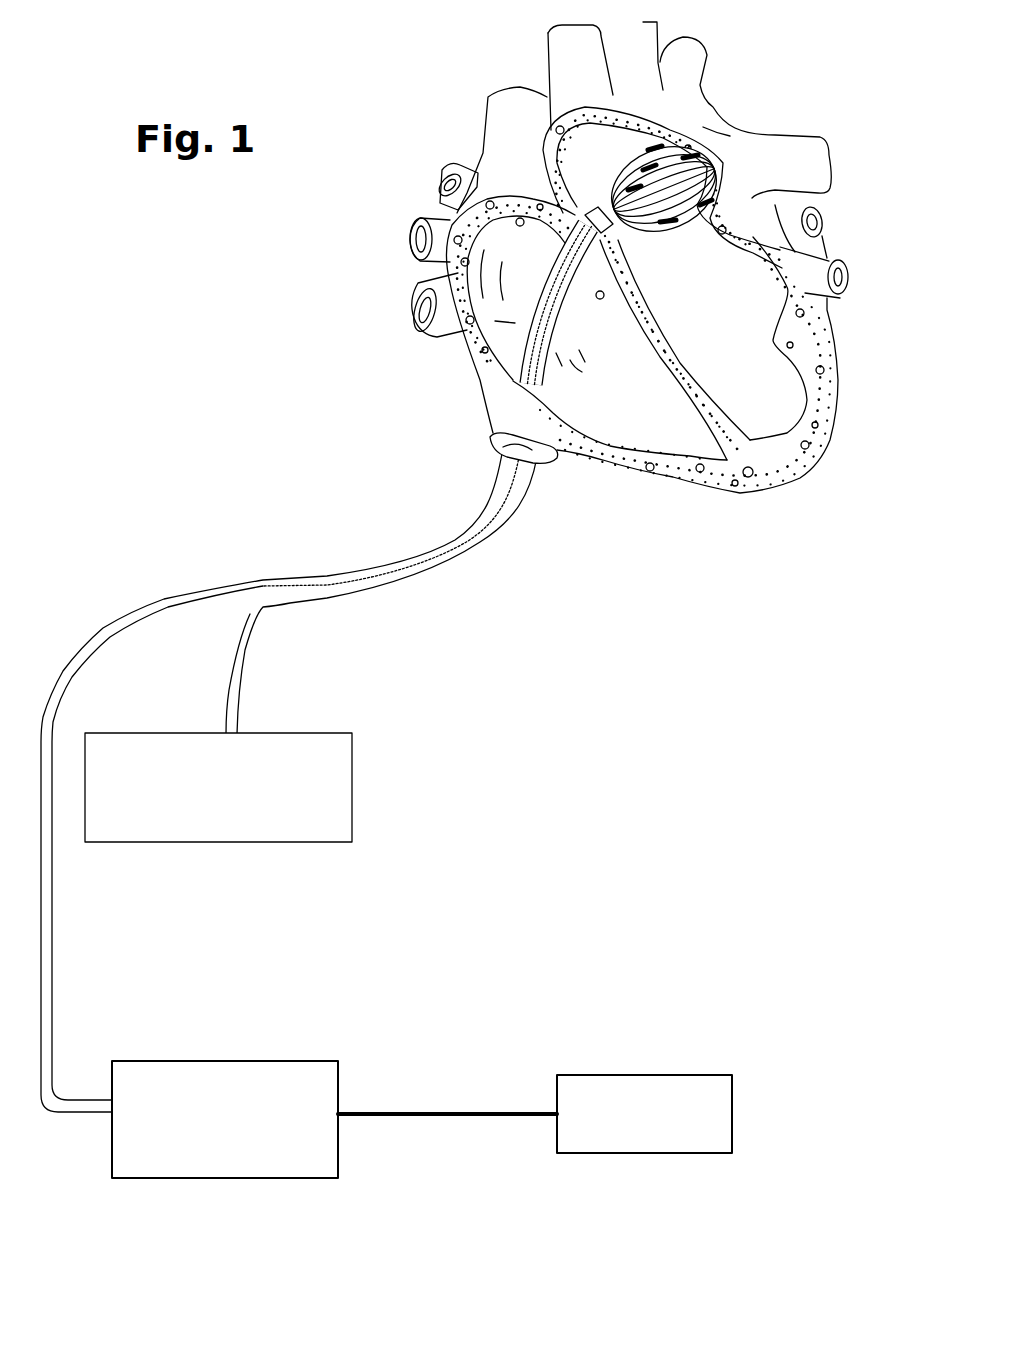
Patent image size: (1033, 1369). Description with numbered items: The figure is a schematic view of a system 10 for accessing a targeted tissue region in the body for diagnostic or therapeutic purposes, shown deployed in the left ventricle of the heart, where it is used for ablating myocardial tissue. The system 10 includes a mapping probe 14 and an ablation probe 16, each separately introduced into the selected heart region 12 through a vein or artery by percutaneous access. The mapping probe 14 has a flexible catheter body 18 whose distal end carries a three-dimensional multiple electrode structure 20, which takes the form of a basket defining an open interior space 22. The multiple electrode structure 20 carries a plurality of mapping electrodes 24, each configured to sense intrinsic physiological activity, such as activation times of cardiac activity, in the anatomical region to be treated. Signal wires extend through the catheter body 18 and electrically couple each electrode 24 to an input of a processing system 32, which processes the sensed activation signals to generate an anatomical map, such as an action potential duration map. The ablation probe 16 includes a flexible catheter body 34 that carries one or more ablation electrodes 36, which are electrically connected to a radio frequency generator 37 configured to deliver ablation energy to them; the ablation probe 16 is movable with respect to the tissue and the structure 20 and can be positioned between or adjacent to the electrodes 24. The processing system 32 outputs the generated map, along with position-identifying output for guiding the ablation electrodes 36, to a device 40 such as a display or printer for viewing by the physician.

The system 10 is at (529, 700).
The heart region 12 is at (750, 328).
The mapping probe 14 is at (517, 312).
The ablation probe 16 is at (616, 249).
The catheter body 18 is at (542, 270).
The multiple electrode structure 20 is at (729, 167).
The open interior space 22 is at (648, 166).
The mapping electrodes 24 is at (622, 158).
The processing system 32 is at (257, 1061).
The catheter body 34 is at (547, 350).
The ablation electrodes 36 is at (688, 156).
The radio frequency generator 37 is at (203, 842).
The device 40 is at (665, 1075).